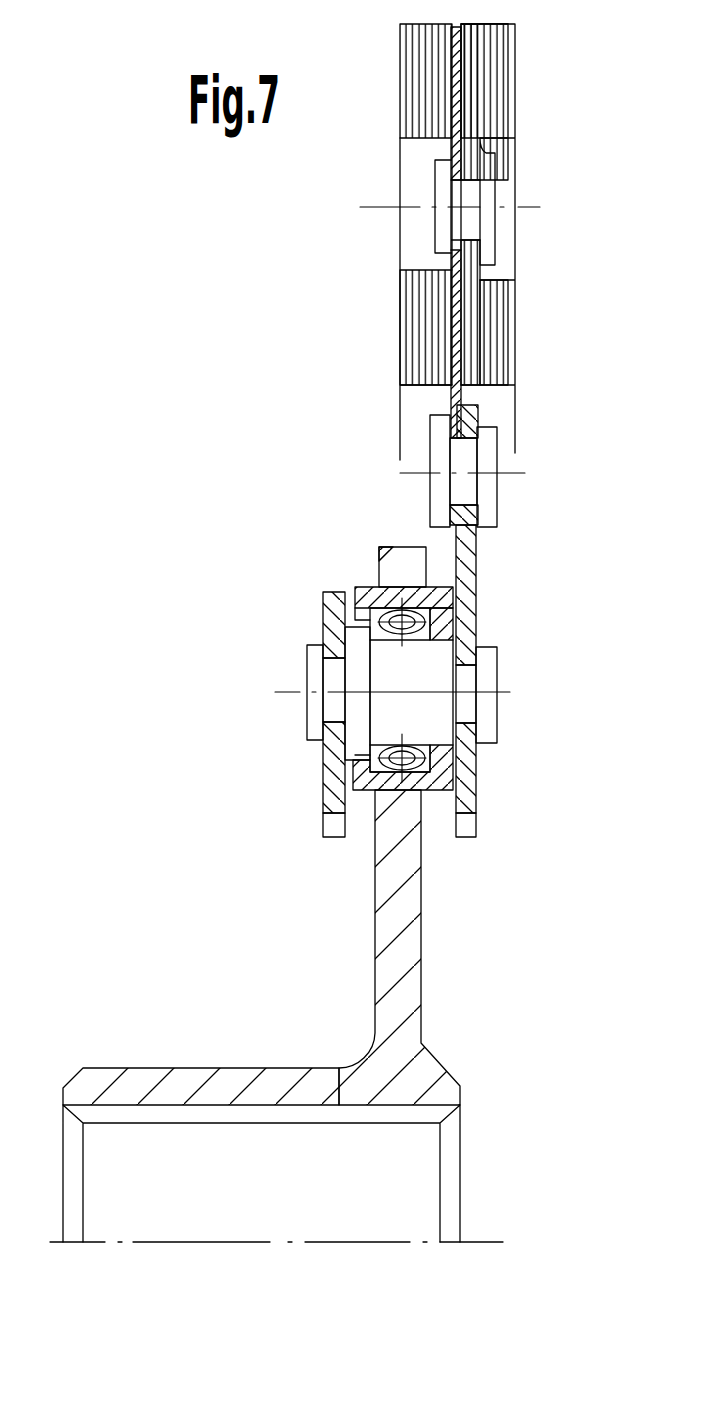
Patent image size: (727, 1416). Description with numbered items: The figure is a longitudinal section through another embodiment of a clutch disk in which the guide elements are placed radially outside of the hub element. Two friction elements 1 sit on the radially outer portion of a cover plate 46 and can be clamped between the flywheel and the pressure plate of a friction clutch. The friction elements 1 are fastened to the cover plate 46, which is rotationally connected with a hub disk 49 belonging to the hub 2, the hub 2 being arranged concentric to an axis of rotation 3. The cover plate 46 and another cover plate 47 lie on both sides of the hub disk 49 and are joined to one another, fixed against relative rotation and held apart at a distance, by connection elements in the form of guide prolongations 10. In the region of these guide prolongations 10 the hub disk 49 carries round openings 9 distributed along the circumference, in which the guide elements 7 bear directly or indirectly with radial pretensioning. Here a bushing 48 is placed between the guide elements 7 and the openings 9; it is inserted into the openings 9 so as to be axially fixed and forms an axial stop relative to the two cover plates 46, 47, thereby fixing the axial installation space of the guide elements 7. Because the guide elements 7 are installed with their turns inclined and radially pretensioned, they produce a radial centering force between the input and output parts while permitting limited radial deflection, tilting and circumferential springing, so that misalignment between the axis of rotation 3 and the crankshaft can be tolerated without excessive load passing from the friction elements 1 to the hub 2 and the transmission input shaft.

The friction elements 1 is at (487, 47).
The hub 2 is at (133, 1085).
The axis of rotation 3 is at (243, 1245).
The guide elements 7 is at (371, 630).
The round openings 9 is at (397, 793).
The guide prolongations 10 is at (417, 677).
The cover plate 46 is at (465, 535).
The cover plate 47 is at (333, 783).
The bushing 48 is at (370, 588).
The hub disk 49 is at (397, 912).